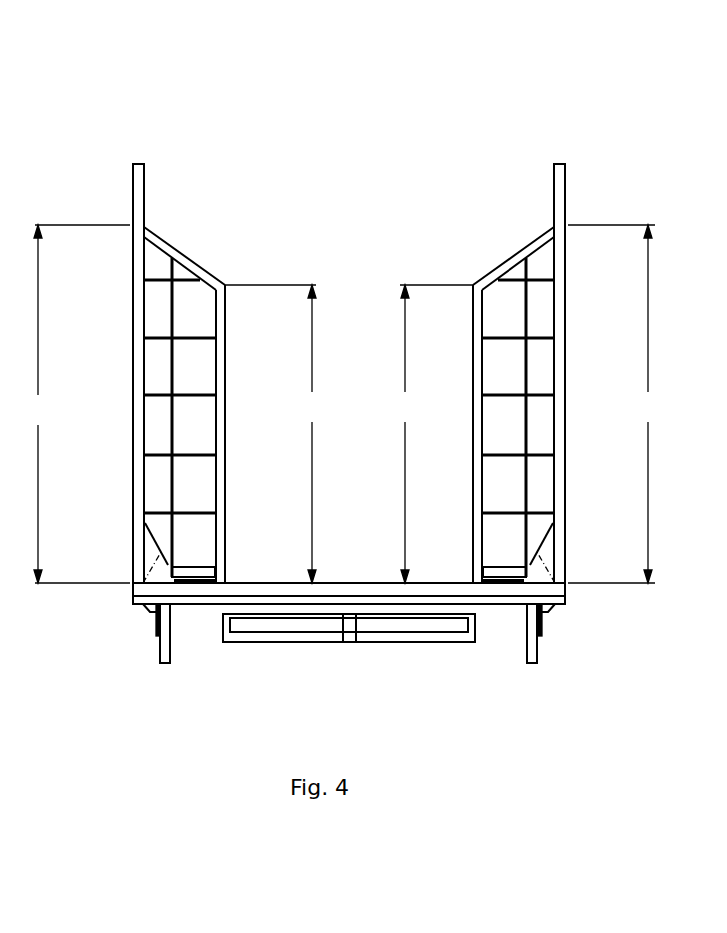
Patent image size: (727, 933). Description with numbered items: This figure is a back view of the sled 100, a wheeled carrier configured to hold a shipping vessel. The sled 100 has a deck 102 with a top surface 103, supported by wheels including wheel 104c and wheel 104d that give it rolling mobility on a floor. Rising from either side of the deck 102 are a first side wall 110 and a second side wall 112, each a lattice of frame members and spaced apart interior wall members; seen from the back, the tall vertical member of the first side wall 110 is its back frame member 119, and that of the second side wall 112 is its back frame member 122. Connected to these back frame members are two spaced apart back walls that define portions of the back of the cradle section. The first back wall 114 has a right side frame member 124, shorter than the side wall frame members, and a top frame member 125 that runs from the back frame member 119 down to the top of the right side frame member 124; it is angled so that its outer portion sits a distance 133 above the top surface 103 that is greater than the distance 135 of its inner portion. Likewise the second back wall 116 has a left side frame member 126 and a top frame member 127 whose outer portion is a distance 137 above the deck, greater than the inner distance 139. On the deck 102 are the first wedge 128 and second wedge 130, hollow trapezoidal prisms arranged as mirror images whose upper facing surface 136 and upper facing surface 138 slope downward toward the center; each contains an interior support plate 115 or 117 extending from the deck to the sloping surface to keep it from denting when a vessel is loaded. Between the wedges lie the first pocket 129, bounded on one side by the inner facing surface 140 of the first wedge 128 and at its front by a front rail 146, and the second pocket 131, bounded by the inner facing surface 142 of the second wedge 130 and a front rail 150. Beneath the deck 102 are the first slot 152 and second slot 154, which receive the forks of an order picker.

The sled 100 is at (493, 68).
The deck 102 is at (572, 601).
The top surface 103 is at (316, 583).
The wheel 104c is at (535, 665).
The wheel 104d is at (165, 665).
The first side wall 110 is at (572, 176).
The second side wall 112 is at (130, 291).
The first back wall 114 is at (518, 246).
The interior support plate 115 is at (573, 582).
The second back wall 116 is at (154, 220).
The interior support plate 117 is at (150, 568).
The back frame member 119 is at (567, 322).
The back frame member 122 is at (131, 367).
The right side frame member 124 is at (475, 385).
The top frame member 125 is at (486, 274).
The left side frame member 126 is at (226, 353).
The top frame member 127 is at (175, 247).
The first wedge 128 is at (548, 552).
The first pocket 129 is at (497, 553).
The second wedge 130 is at (148, 553).
The second pocket 131 is at (193, 567).
The distance 133 is at (618, 404).
The distance 135 is at (428, 434).
The upper facing surface 136 is at (541, 570).
The distance 137 is at (74, 404).
The upper facing surface 138 is at (145, 530).
The distance 139 is at (279, 434).
The inner facing surface 140 is at (520, 577).
The inner facing surface 142 is at (180, 584).
The front rail 146 is at (498, 576).
The front rail 150 is at (190, 577).
The first slot 152 is at (374, 635).
The second slot 154 is at (313, 630).